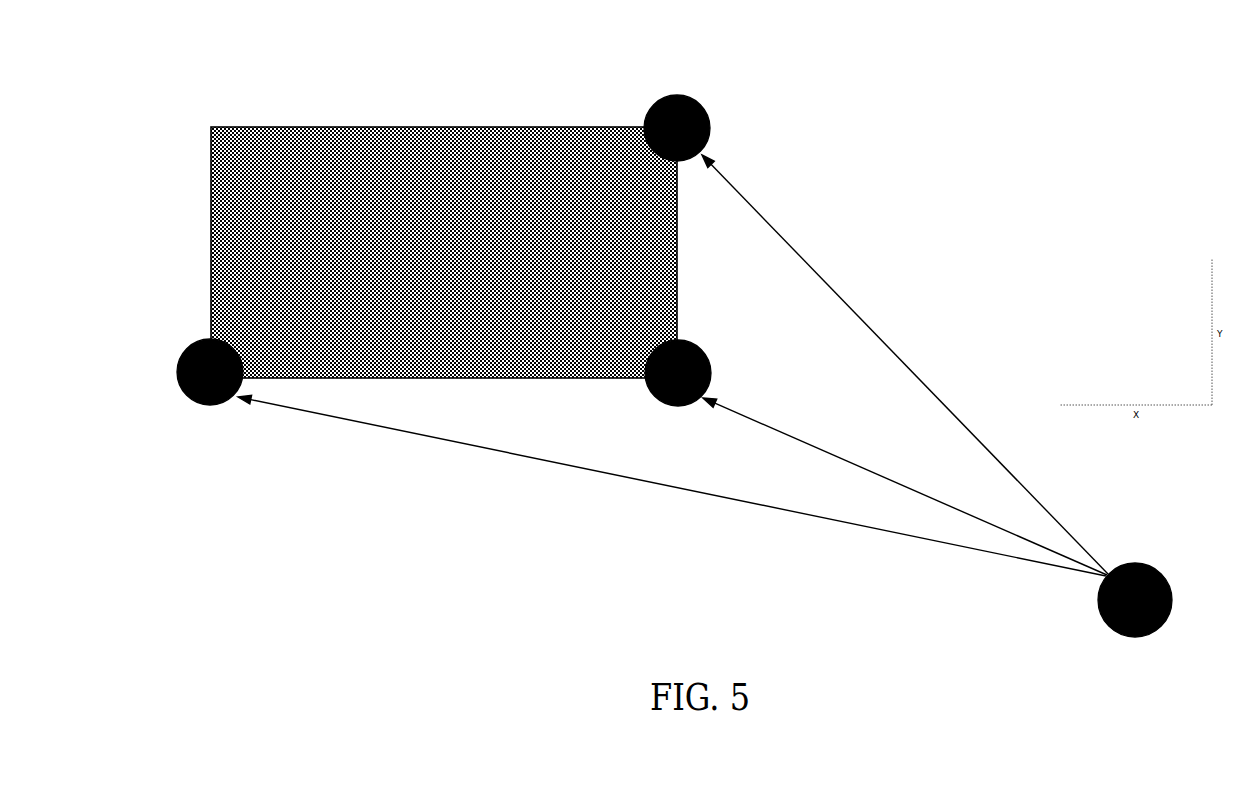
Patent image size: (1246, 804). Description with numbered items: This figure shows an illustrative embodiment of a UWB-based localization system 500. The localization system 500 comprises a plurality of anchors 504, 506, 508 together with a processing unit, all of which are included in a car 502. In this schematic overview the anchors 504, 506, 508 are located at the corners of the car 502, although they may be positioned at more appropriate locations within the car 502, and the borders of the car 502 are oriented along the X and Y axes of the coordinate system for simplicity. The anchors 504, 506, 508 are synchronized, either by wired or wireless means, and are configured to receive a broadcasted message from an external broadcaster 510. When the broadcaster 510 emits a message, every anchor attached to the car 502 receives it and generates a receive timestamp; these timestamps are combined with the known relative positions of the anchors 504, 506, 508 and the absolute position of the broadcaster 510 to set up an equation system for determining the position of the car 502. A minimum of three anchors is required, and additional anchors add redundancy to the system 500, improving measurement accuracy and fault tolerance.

The UWB-based localization system 500 is at (472, 57).
The car 502 is at (268, 161).
The anchor 504 is at (698, 108).
The anchor 506 is at (217, 404).
The anchor 508 is at (697, 347).
The external broadcaster 510 is at (1143, 573).